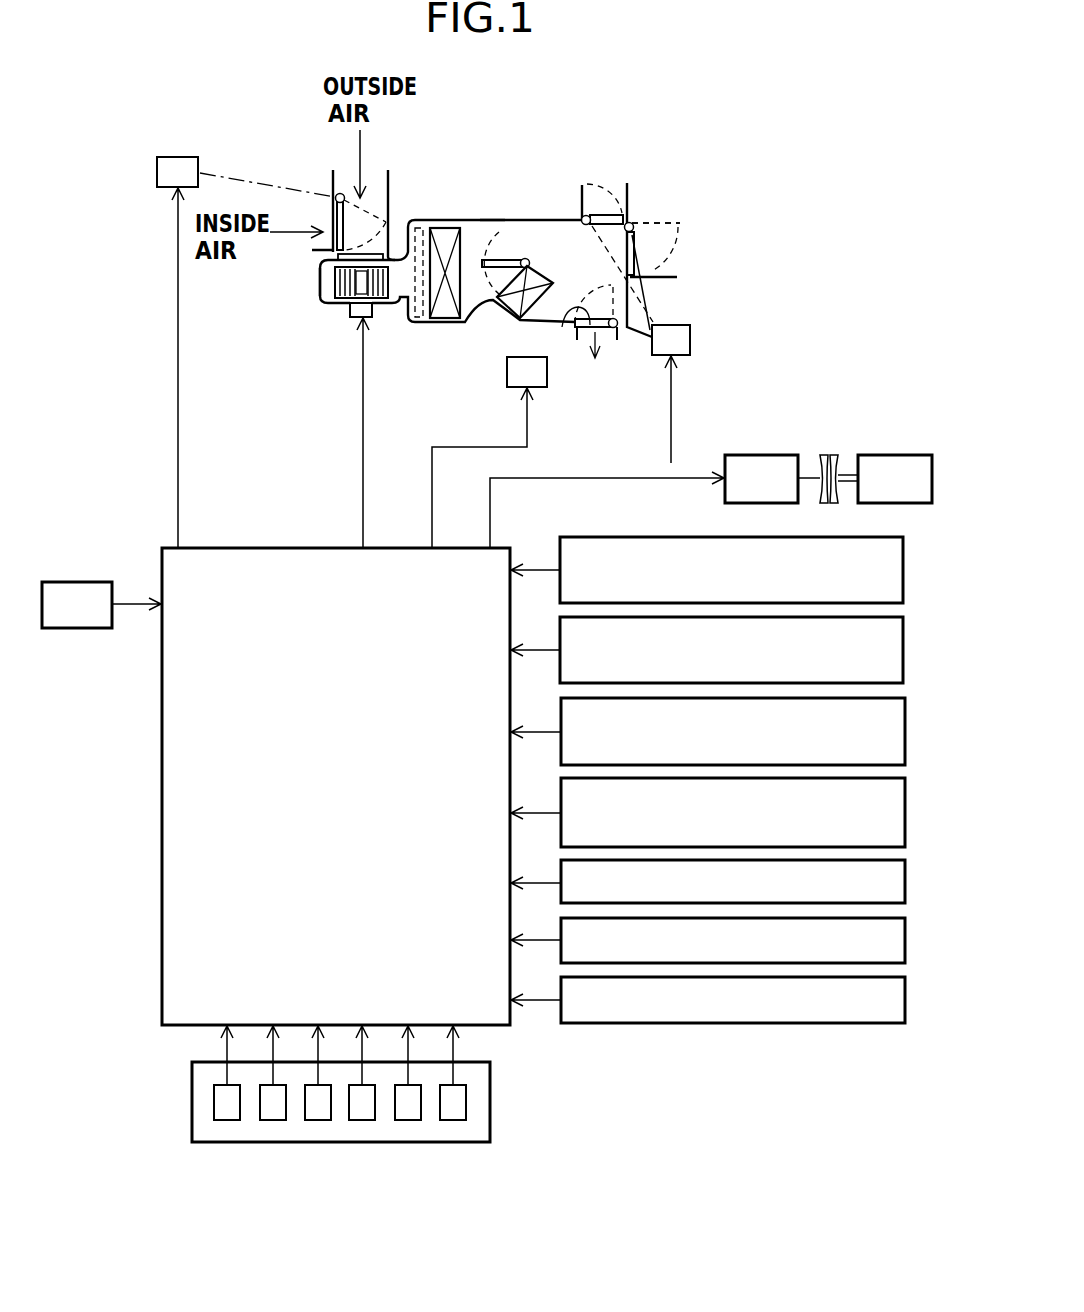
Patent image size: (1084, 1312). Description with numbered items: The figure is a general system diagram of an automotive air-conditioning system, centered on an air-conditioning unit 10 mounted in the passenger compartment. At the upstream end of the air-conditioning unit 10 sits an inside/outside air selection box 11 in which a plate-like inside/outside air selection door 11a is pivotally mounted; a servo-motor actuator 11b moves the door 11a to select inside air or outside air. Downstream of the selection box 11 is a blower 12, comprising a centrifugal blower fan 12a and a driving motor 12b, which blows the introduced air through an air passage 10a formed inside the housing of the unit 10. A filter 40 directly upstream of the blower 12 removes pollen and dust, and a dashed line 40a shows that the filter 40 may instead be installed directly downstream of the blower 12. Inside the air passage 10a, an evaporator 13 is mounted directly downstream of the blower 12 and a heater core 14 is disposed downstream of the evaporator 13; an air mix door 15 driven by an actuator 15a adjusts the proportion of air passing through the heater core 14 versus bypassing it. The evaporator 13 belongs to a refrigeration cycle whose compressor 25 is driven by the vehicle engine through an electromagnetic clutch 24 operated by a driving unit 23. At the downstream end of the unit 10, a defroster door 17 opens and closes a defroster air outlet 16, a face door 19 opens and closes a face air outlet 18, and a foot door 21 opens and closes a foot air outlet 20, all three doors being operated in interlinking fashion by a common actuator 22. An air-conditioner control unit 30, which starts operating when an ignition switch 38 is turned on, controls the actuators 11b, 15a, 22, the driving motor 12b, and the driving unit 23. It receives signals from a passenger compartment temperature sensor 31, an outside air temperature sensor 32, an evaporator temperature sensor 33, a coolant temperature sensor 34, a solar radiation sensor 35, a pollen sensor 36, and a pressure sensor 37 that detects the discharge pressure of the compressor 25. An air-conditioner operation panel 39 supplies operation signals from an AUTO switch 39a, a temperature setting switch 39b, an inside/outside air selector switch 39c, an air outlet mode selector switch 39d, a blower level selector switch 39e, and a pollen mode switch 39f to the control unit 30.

The air-conditioning unit 10 is at (463, 211).
The air passage 10a is at (492, 219).
The inside/outside air selection box 11 is at (388, 197).
The inside/outside air selection door 11a is at (330, 216).
The actuator 11b is at (177, 157).
The blower 12 is at (308, 302).
The centrifugal blower fan 12a is at (350, 287).
The driving motor 12b is at (357, 318).
The evaporator 13 is at (448, 319).
The heater core 14 is at (500, 320).
The air mix door 15 is at (504, 258).
The actuator 15a is at (508, 380).
The defroster air outlet 16 is at (598, 212).
The defroster door 17 is at (613, 210).
The face air outlet 18 is at (636, 250).
The face door 19 is at (634, 258).
The foot air outlet 20 is at (588, 336).
The foot door 21 is at (567, 333).
The common actuator 22 is at (652, 350).
The driving unit 23 is at (760, 455).
The electromagnetic clutch 24 is at (825, 455).
The compressor 25 is at (888, 455).
The air-conditioner control unit 30 is at (162, 735).
The passenger compartment temperature sensor 31 is at (904, 560).
The outside air temperature sensor 32 is at (904, 642).
The evaporator temperature sensor 33 is at (906, 722).
The coolant temperature sensor 34 is at (906, 810).
The solar radiation sensor 35 is at (906, 880).
The pollen sensor 36 is at (906, 938).
The pressure sensor 37 is at (906, 998).
The ignition switch 38 is at (92, 582).
The air-conditioner operation panel 39 is at (192, 1100).
The AUTO switch 39a is at (227, 1120).
The temperature setting switch 39b is at (273, 1120).
The inside/outside air selector switch 39c is at (318, 1120).
The air outlet mode selector switch 39d is at (362, 1120).
The blower level selector switch 39e is at (408, 1120).
The pollen mode switch 39f is at (453, 1120).
The filter 40 is at (378, 256).
The dashed line (alternative filter position) 40a is at (420, 318).